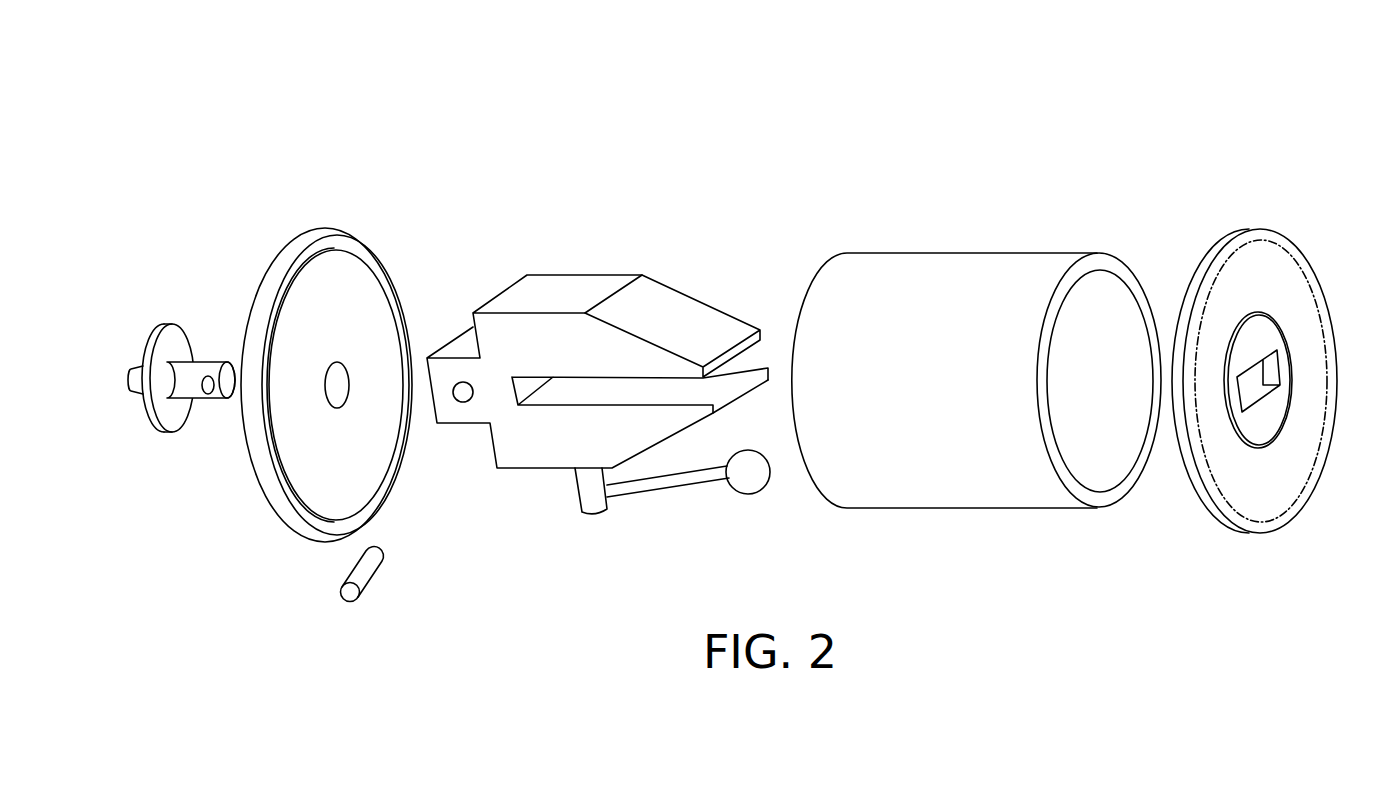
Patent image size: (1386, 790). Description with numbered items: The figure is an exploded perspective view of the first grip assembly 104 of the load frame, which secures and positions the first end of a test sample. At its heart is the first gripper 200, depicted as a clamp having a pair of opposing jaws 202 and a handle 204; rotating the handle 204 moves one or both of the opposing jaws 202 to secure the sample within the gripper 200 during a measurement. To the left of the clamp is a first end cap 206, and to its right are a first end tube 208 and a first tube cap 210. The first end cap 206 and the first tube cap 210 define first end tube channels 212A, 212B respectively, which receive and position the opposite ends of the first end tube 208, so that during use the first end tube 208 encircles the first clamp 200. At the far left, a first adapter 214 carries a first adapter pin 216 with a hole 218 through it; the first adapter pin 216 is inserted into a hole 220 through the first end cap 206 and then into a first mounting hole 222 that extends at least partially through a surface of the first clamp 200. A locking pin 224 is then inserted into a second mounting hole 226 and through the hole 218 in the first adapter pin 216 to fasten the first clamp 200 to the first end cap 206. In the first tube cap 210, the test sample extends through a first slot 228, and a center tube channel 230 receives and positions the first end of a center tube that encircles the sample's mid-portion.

The first grip assembly 104 is at (326, 110).
The first gripper 200 is at (577, 291).
The opposing jaws 202 is at (727, 327).
The handle 204 is at (695, 487).
The first end cap 206 is at (342, 268).
The first end tube 208 is at (947, 263).
The first tube cap 210 is at (1268, 247).
The first end tube channel 212A is at (396, 290).
The first end tube channel 212B is at (1196, 243).
The first adapter 214 is at (167, 327).
The first adapter pin 216 is at (208, 360).
The hole 218 is at (206, 390).
The hole 220 is at (342, 389).
The first mounting hole 222 is at (431, 401).
The locking pin 224 is at (370, 563).
The second mounting hole 226 is at (463, 401).
The first slot 228 is at (1265, 383).
The center tube channel 230 is at (1247, 447).